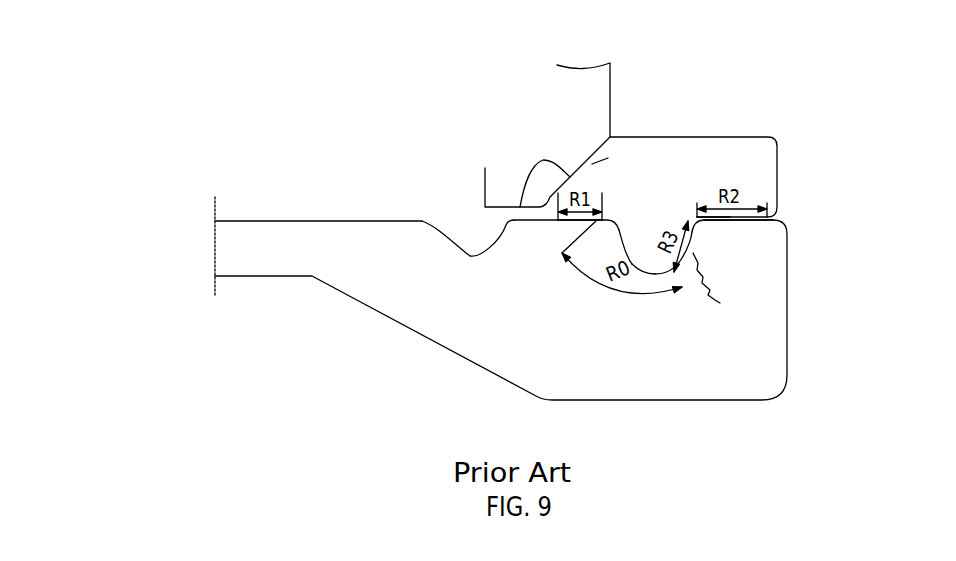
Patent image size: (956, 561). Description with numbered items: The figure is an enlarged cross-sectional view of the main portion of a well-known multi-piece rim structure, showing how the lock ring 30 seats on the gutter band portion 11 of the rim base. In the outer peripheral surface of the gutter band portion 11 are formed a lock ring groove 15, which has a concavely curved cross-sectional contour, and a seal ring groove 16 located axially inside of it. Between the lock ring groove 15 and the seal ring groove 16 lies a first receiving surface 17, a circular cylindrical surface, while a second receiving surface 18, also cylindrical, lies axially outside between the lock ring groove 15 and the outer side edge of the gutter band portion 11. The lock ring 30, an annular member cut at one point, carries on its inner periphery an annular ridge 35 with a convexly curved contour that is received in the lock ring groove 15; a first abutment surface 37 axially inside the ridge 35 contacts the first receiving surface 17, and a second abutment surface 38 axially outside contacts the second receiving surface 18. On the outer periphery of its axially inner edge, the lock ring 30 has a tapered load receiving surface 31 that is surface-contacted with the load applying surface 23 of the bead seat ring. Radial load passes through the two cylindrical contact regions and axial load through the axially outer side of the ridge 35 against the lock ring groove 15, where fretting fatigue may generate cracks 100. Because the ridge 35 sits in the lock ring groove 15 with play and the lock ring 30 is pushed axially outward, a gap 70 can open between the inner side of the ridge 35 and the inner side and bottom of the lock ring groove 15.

The gutter band portion 11 is at (455, 313).
The lock ring groove 15 is at (657, 266).
The seal ring groove 16 is at (466, 252).
The first receiving surface 17 is at (587, 214).
The second receiving surface 18 is at (712, 217).
The load applying surface 23 is at (608, 158).
The lock ring 30 is at (722, 136).
The load receiving surface 31 is at (520, 207).
The ridge 35 is at (642, 244).
The first abutment surface 37 is at (567, 222).
The second abutment surface 38 is at (732, 221).
The gap 70 is at (622, 245).
The cracks 100 is at (723, 303).